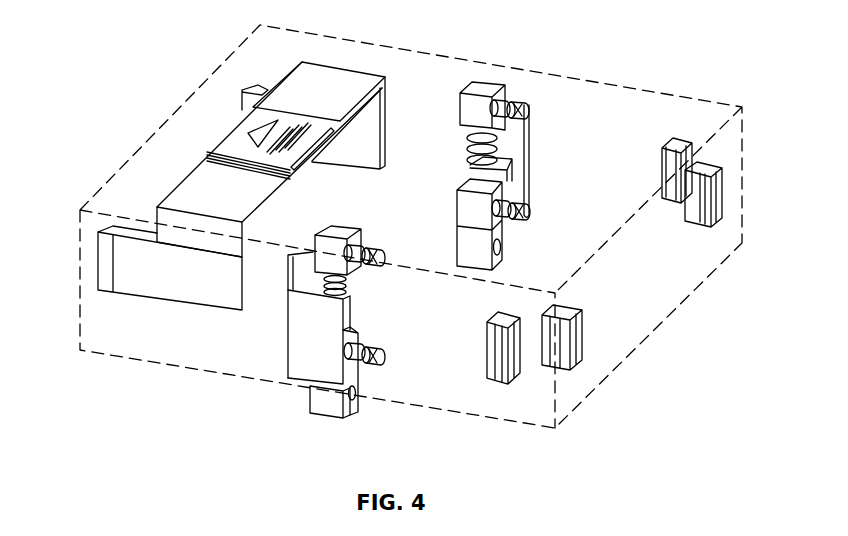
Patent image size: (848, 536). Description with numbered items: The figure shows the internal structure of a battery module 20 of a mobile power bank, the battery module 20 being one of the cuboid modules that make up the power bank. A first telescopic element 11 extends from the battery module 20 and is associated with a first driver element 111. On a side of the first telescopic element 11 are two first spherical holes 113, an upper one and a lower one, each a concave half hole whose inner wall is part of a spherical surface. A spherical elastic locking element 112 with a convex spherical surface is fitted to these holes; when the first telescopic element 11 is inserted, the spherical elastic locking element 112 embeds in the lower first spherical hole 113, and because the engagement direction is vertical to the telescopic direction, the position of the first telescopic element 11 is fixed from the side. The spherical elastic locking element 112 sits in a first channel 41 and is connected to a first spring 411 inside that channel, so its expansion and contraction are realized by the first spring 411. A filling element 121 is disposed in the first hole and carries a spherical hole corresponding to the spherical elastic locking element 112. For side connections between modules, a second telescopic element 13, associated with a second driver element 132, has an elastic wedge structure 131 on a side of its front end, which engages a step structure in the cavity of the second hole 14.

The battery module 20 is at (128, 115).
The second telescopic element 13 is at (343, 62).
The wedge structure 131 is at (245, 90).
The second driver element 132 is at (288, 146).
The filling element 121 is at (487, 84).
The first channel 41 is at (512, 116).
The first spring 411 is at (533, 108).
The spherical elastic locking element 112 is at (530, 106).
The first driver element 111 is at (288, 382).
The first spherical hole 113 is at (360, 407).
The first telescopic element 11 is at (325, 408).
The second hole 14 is at (722, 207).